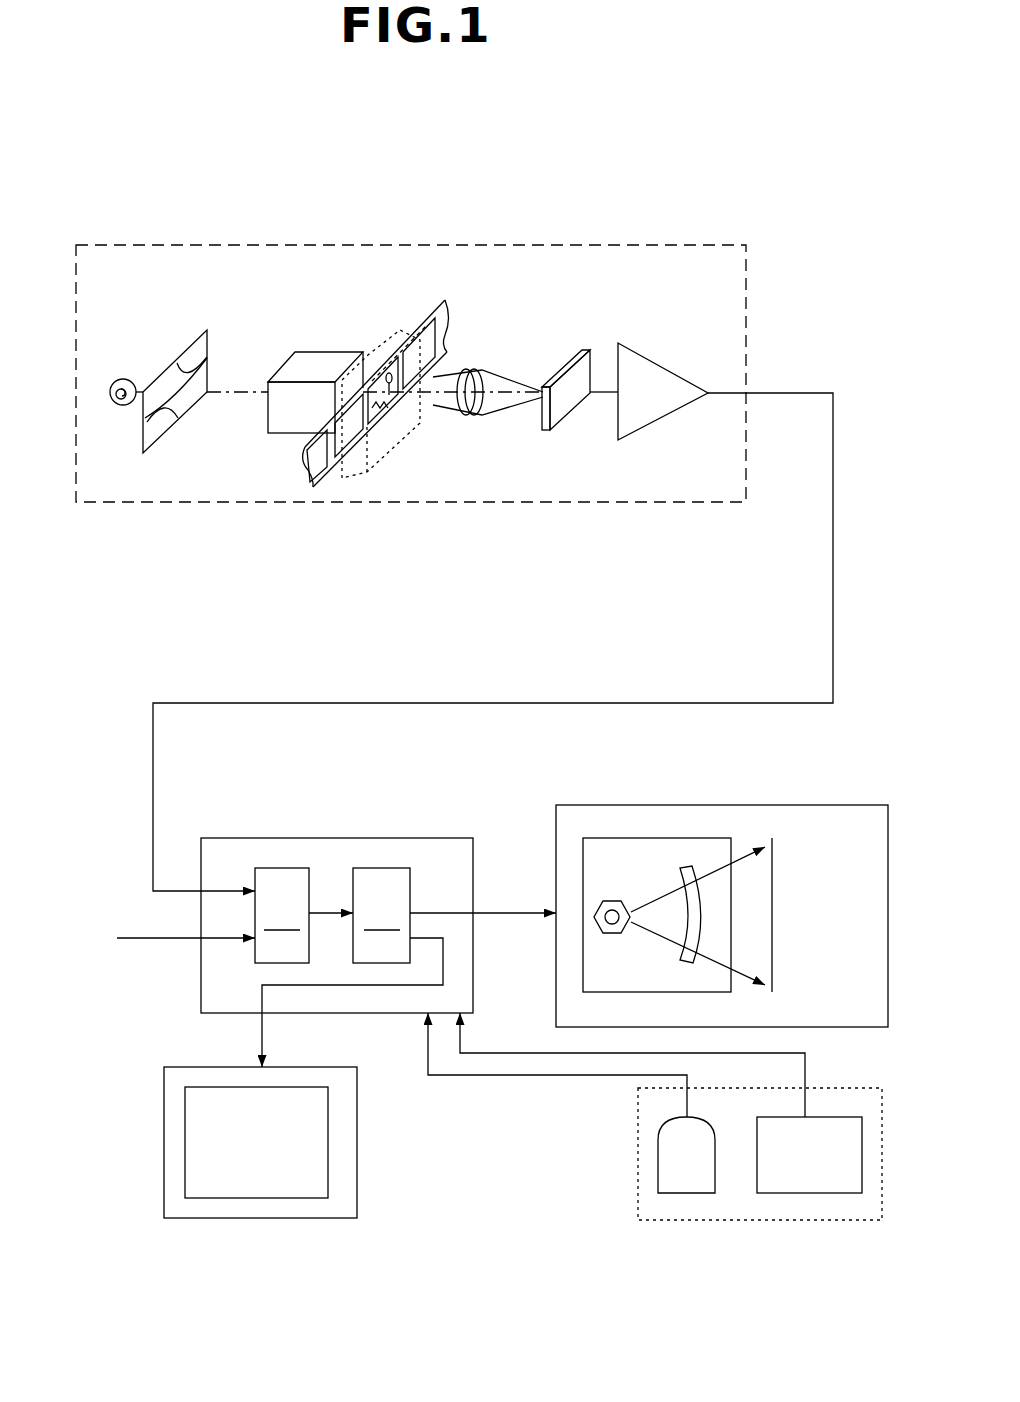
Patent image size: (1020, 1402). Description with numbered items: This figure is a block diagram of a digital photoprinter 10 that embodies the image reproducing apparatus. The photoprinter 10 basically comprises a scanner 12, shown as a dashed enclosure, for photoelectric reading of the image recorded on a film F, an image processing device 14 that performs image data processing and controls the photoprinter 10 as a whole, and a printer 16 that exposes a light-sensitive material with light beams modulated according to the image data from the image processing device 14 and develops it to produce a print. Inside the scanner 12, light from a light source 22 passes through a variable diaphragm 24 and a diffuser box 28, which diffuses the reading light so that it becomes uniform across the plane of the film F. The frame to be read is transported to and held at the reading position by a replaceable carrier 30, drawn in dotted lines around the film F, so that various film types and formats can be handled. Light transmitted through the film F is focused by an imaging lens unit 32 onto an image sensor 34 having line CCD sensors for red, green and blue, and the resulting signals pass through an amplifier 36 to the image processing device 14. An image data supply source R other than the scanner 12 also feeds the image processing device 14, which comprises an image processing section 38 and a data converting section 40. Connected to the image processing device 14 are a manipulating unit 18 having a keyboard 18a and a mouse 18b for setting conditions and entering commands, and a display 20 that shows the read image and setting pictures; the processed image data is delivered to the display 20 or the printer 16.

The digital photoprinter 10 is at (820, 266).
The scanner 12 is at (158, 503).
The image processing device 14 is at (333, 836).
The printer 16 is at (716, 804).
The manipulating unit 18 is at (738, 1222).
The keyboard 18a is at (812, 1195).
The mouse 18b is at (680, 1195).
The display 20 is at (252, 1220).
The light source 22 is at (123, 378).
The variable diaphragm 24 is at (182, 352).
The diffuser box 28 is at (320, 372).
The carrier 30 is at (400, 434).
The imaging lens unit 32 is at (468, 368).
The image sensor 34 is at (566, 366).
The amplifier 36 is at (662, 415).
The image processing section 38 is at (282, 915).
The data converting section 40 is at (381, 915).
The film F is at (437, 297).
The image data supply source R is at (171, 938).